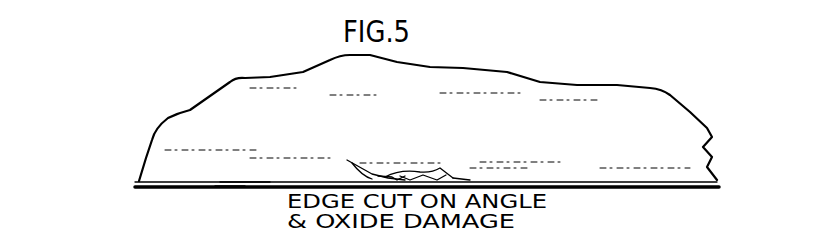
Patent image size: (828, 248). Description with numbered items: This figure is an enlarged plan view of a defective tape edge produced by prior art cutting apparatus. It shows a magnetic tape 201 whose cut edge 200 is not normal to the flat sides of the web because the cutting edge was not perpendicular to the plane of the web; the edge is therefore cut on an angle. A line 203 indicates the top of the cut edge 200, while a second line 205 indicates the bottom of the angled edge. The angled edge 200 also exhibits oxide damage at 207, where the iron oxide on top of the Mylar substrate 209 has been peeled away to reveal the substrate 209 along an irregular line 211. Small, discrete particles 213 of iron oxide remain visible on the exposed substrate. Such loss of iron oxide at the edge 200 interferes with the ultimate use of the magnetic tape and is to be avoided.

The cut edge 200 is at (160, 194).
The magnetic tape 201 is at (138, 131).
The line indicating top of cut edge 203 is at (240, 183).
The line indicating bottom of angled edge 205 is at (230, 189).
The oxide damage 207 is at (435, 158).
The Mylar substrate 209 is at (453, 178).
The irregular line 211 is at (395, 178).
The discrete particles of iron oxide 213 is at (366, 160).